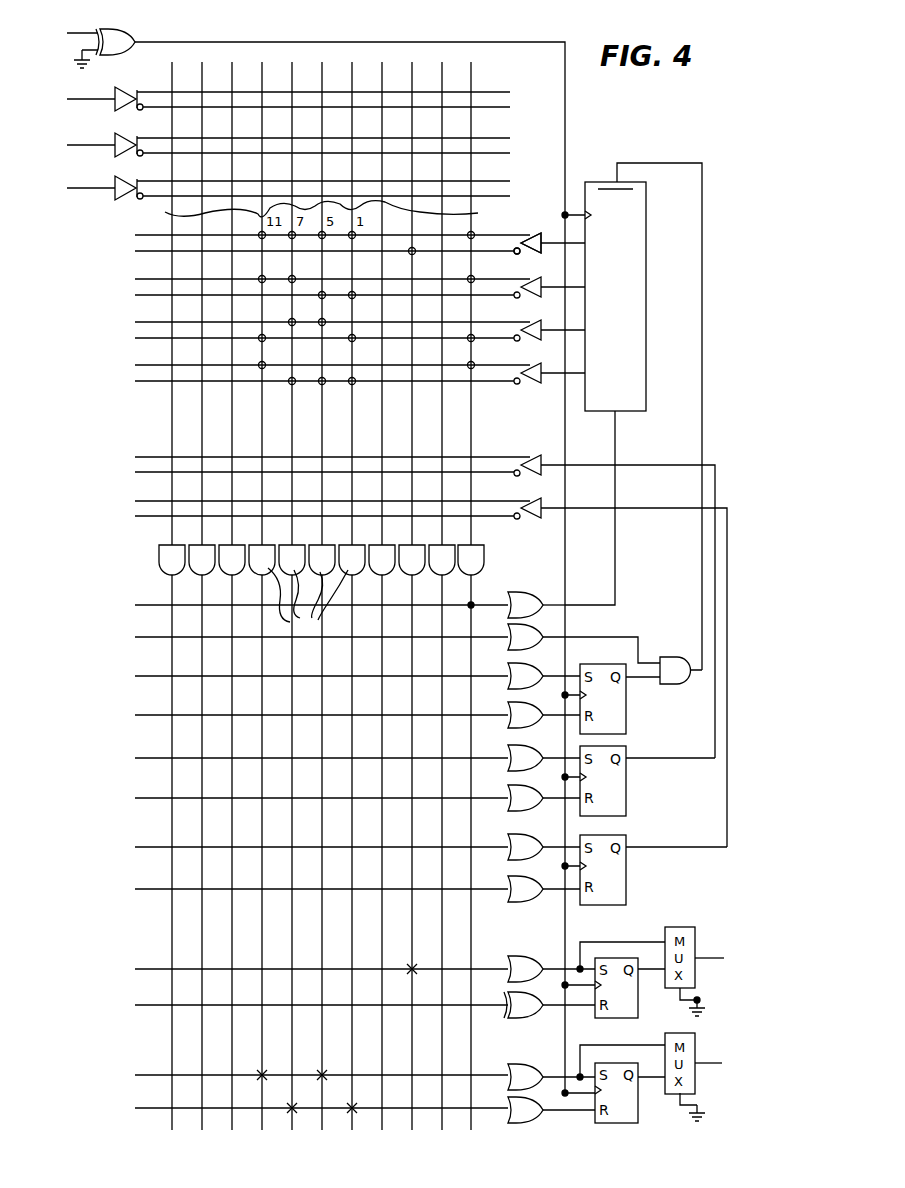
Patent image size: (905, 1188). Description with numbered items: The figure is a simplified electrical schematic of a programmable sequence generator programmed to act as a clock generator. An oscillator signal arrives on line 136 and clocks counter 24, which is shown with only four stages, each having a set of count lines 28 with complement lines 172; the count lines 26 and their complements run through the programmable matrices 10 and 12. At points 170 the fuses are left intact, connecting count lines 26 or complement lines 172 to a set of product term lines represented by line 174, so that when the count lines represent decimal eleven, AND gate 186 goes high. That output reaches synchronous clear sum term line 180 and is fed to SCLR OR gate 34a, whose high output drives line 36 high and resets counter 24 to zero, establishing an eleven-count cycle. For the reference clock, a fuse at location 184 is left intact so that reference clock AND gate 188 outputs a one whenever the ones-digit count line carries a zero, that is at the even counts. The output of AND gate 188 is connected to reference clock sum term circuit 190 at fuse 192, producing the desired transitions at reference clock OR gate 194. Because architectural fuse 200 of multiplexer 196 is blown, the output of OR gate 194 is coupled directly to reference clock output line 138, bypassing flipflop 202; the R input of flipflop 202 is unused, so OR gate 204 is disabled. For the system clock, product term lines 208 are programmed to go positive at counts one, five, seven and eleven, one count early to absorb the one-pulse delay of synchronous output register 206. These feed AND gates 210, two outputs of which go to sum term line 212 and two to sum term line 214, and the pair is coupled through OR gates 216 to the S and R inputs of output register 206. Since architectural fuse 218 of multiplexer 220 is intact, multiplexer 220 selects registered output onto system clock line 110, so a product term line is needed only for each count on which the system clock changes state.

The line 136 is at (80, 34).
The product term lines 208 is at (326, 212).
The fuse location 184 is at (410, 250).
The points 170 is at (474, 240).
The complement lines 172 is at (474, 283).
The product term line 174 is at (474, 433).
The count lines 26 is at (546, 234).
The count lines 28 is at (514, 246).
The counter 24 is at (647, 226).
The line 36 is at (616, 430).
The matrix 10 is at (118, 342).
The matrix 12 is at (118, 747).
The synchronous clear sum term line 180 is at (148, 605).
The AND gate 186 is at (484, 565).
The reference clock AND gate 188 is at (407, 567).
The AND gates 210 is at (308, 601).
The SCLR OR gate 34a is at (518, 600).
The reference clock sum term circuit 190 is at (142, 969).
The fuse 192 is at (405, 964).
The reference clock OR gate 194 is at (522, 957).
The OR gate 204 is at (520, 1018).
The flipflop 202 is at (615, 957).
The multiplexer 196 is at (680, 926).
The reference clock output line 138 is at (716, 950).
The architectural fuse 200 is at (700, 998).
The multiplexer 220 is at (654, 1040).
The system clock line 110 is at (712, 1058).
The architectural fuse 218 is at (700, 1103).
The synchronous output register 206 is at (638, 1122).
The sum term line 212 is at (152, 1075).
The sum term line 214 is at (135, 1108).
The OR gates 216 is at (510, 1104).